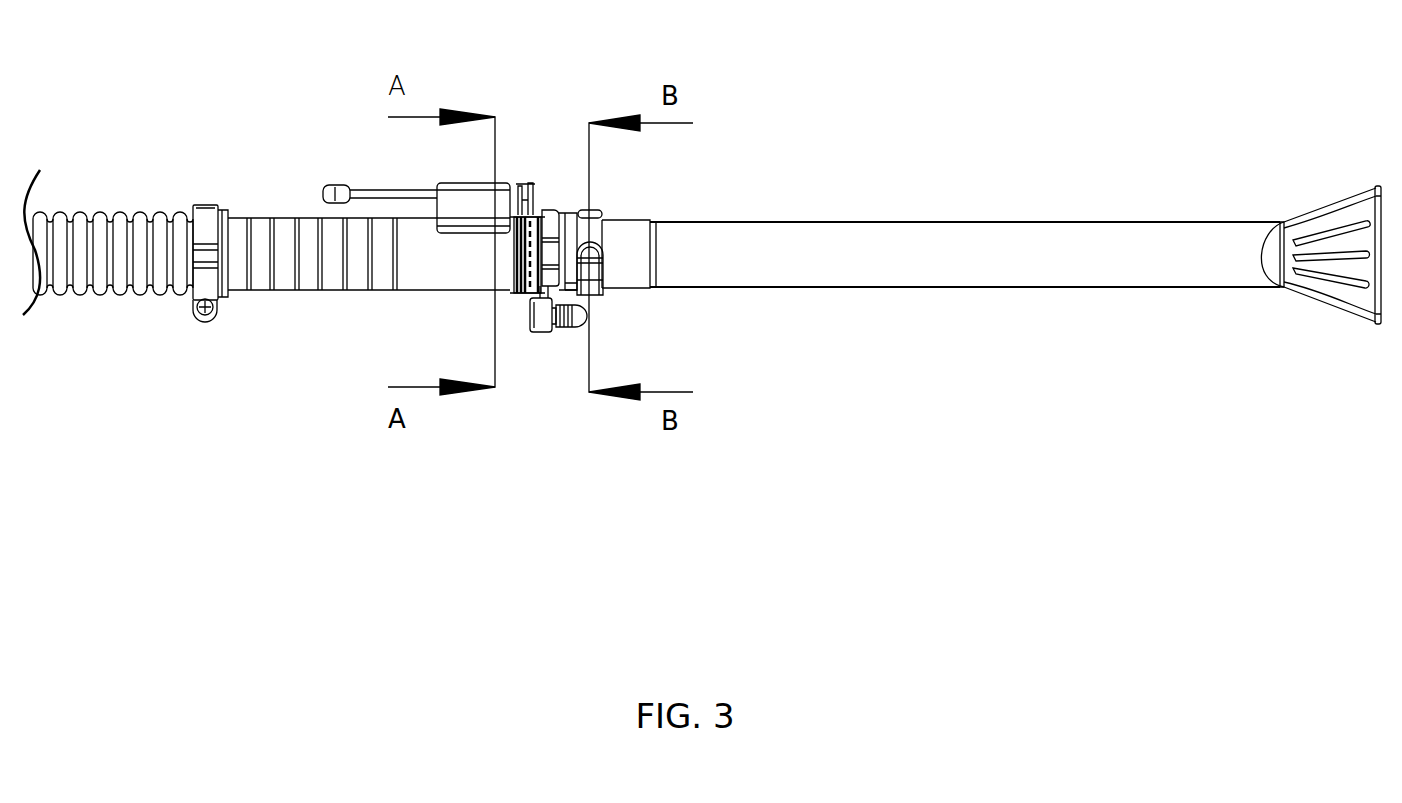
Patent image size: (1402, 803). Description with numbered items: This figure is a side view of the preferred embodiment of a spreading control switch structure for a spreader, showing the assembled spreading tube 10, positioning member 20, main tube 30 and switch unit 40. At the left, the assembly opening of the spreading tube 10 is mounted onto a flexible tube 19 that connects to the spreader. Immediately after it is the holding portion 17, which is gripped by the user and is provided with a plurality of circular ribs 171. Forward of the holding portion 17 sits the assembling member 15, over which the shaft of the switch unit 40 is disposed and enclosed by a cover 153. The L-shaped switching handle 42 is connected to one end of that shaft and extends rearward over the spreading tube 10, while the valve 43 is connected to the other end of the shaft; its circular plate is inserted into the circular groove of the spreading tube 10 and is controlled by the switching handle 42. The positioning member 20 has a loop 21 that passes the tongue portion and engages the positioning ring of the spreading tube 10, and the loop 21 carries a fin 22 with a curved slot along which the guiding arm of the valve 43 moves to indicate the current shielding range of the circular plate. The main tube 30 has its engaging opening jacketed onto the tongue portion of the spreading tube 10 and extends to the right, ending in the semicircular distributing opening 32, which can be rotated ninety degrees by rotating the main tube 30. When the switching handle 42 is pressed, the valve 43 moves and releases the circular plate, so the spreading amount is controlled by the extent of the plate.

The spreading tube 10 is at (351, 286).
The assembling member 15 is at (462, 212).
The holding portion 17 is at (258, 290).
The circular ribs 171 is at (250, 265).
The flexible tube 19 is at (132, 232).
The positioning member 20 is at (564, 297).
The loop 21 is at (557, 180).
The fin 22 is at (535, 335).
The main tube 30 is at (989, 215).
The distributing opening 32 is at (1373, 190).
The switch unit 40 is at (416, 189).
The switching handle 42 is at (370, 190).
The valve 43 is at (530, 180).
The cover 153 is at (501, 180).